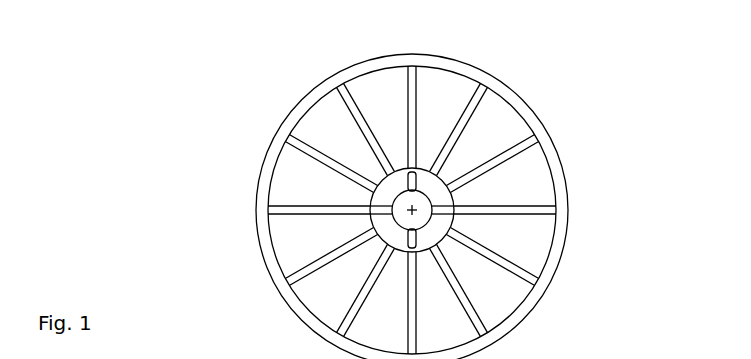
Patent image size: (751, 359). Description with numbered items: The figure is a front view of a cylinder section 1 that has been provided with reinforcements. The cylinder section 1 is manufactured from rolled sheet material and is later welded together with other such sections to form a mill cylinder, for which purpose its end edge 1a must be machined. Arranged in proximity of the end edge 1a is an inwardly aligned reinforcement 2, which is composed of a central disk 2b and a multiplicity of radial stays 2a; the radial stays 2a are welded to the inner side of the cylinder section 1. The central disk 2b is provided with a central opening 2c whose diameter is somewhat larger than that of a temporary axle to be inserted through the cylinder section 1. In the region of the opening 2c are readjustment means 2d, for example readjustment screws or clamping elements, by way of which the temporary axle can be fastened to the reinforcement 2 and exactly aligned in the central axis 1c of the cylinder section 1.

The cylinder section 1 is at (573, 125).
The end edge 1a is at (362, 63).
The central axis 1c is at (423, 170).
The reinforcement 2 is at (452, 174).
The radial stay 2a is at (515, 160).
The central disk 2b is at (458, 224).
The central opening 2c is at (388, 200).
The readjustment means 2d is at (298, 262).